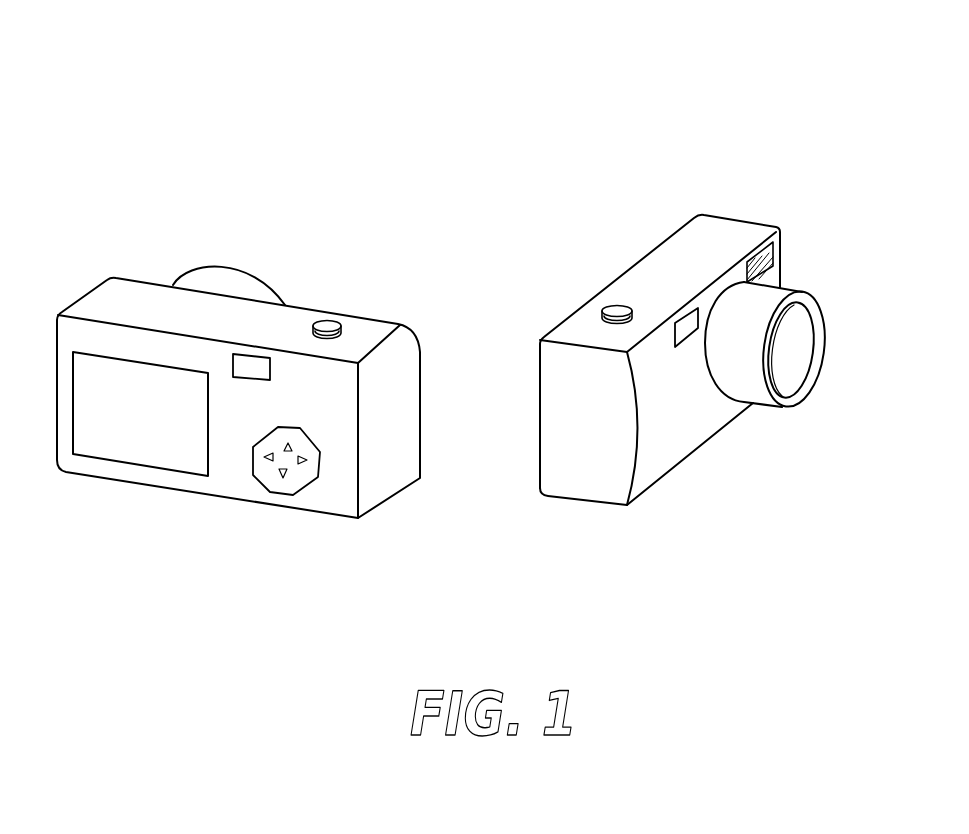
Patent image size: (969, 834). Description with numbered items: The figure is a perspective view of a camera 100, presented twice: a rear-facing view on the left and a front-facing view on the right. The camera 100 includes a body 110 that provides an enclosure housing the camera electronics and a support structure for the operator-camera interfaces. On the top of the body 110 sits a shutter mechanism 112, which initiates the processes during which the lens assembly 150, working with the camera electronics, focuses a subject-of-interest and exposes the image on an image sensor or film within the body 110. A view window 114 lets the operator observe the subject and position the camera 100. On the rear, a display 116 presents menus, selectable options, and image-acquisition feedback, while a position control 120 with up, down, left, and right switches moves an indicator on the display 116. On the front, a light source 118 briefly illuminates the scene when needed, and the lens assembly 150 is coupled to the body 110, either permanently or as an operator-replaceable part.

The camera 100 is at (479, 172).
The body 110 is at (385, 478).
The shutter mechanism 112 is at (603, 311).
The view window 114 is at (254, 352).
The display 116 is at (102, 385).
The light source 118 is at (779, 243).
The position control 120 is at (243, 475).
The lens assembly 150 is at (227, 265).